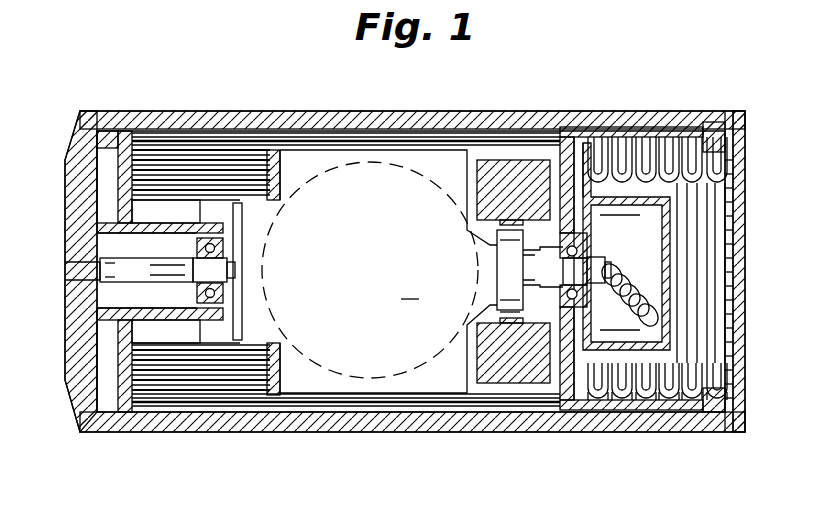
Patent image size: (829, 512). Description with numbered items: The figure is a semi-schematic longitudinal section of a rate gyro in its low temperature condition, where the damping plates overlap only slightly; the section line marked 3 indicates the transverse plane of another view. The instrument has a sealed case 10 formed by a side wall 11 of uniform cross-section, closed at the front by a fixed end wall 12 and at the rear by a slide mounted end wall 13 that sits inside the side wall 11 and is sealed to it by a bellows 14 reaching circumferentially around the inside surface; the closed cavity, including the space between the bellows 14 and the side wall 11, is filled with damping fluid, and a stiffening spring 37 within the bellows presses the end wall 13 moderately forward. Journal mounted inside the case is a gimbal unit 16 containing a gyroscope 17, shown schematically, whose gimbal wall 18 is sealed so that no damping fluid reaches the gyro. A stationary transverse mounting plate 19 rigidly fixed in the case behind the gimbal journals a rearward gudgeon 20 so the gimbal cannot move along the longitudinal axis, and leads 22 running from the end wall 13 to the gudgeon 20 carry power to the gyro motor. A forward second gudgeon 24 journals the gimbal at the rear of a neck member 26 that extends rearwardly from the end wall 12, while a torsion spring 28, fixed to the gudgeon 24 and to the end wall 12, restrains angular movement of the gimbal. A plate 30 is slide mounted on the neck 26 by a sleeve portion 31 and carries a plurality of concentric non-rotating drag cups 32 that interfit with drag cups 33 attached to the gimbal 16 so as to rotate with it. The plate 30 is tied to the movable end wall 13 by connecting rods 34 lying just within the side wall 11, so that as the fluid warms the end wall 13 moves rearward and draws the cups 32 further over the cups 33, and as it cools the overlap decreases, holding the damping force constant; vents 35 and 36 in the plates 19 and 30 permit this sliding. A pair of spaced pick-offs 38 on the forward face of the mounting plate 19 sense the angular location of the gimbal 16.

The section line 3- 3 is at (193, 84).
The sealed case 10 is at (455, 110).
The side wall 11 is at (360, 420).
The fixed end wall 12 is at (78, 385).
The slide mounted end wall 13 is at (597, 342).
The bellows 14 is at (637, 397).
The gimbal unit 16 is at (450, 385).
The gyroscope 17 is at (379, 271).
The gimbal wall 18 is at (237, 240).
The mounting plate 19 is at (574, 160).
The gudgeon 20 is at (562, 260).
The leads 22 is at (620, 273).
The second gudgeon 24 is at (217, 270).
The neck member 26 is at (100, 258).
The torsion spring 28 is at (130, 272).
The plate 30 is at (118, 162).
The sleeve portion 31 is at (217, 212).
The non-rotating drag cups 32 is at (178, 148).
The drag cups 33 is at (245, 150).
The connecting rods 34 is at (358, 140).
The vent 35 is at (560, 135).
The vent 36 is at (118, 208).
The stiffening spring 37 is at (648, 140).
The pick-offs 38 is at (510, 162).